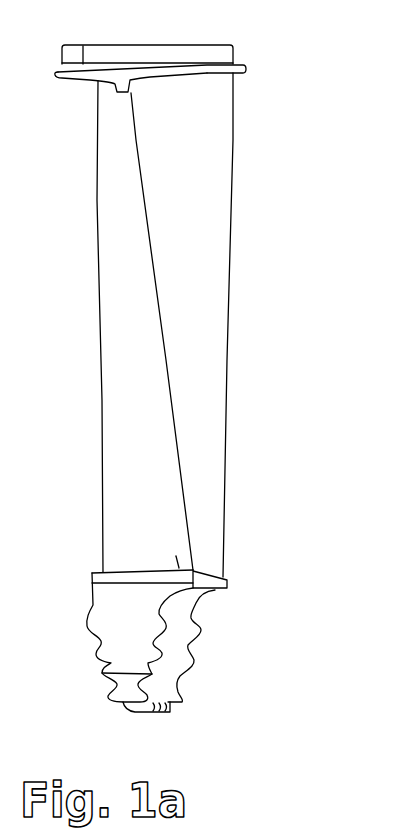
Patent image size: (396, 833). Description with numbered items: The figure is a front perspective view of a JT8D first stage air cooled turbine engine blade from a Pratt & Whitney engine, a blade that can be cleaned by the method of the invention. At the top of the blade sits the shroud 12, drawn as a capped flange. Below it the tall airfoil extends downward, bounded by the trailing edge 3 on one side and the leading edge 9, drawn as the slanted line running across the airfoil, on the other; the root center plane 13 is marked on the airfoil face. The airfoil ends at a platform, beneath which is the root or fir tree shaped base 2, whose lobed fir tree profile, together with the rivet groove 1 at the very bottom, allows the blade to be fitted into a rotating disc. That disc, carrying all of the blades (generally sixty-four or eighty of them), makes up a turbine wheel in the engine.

The rivet groove 1 is at (122, 703).
The root or fir tree shaped base 2 is at (197, 675).
The trailing edge 3 is at (193, 325).
The leading edge 9 is at (178, 432).
The shroud 12 is at (241, 62).
The root center plane 13 is at (158, 505).